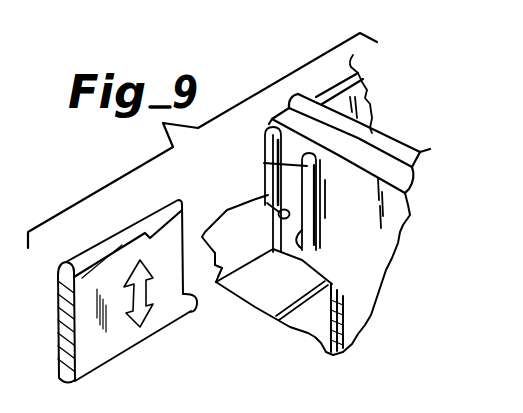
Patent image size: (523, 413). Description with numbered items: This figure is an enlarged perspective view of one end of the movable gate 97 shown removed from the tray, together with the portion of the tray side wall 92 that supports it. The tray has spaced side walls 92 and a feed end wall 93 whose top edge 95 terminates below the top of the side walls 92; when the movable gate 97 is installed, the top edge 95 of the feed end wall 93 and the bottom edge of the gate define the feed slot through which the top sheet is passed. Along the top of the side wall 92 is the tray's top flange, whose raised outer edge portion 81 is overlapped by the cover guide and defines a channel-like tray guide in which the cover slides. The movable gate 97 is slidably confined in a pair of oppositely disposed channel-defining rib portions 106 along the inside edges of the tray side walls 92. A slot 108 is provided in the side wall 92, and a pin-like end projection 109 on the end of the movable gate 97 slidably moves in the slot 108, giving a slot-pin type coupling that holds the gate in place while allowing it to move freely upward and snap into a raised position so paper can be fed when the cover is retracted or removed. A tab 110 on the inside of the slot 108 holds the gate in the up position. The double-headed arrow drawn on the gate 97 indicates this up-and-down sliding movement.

The raised outer edge portion 81 is at (387, 147).
The side wall 92 is at (407, 229).
The feed end wall 93 is at (320, 321).
The top edge 95 is at (270, 295).
The movable gate 97 is at (98, 353).
The channel-defining rib portions 106 is at (262, 150).
The slot 108 is at (298, 248).
The pin-like end projection 109 is at (193, 319).
The tab 110 is at (267, 204).